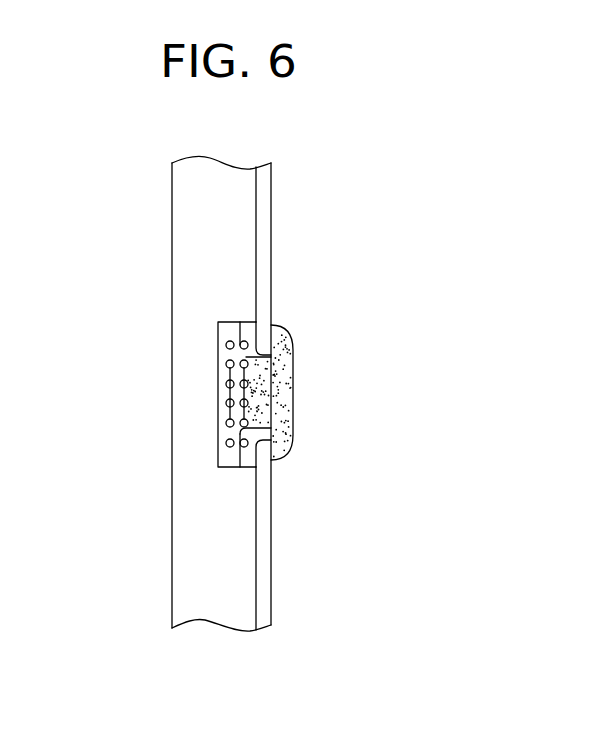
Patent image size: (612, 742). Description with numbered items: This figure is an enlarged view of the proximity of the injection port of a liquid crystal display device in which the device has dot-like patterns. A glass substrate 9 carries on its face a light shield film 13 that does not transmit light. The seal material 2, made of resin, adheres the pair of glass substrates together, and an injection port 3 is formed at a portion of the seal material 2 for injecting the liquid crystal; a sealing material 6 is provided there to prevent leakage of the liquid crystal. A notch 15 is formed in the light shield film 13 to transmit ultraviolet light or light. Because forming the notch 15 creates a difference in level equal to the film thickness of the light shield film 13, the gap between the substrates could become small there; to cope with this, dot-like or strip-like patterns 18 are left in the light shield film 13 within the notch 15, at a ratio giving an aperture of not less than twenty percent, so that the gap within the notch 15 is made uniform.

The light shield film 13 is at (223, 227).
The notch 15 is at (228, 333).
The seal material 2 is at (263, 334).
The injection port 3 is at (223, 395).
The sealing material 6 is at (285, 385).
The dot-like or strip-like patterns 18 is at (247, 405).
The glass substrate 9 is at (265, 512).